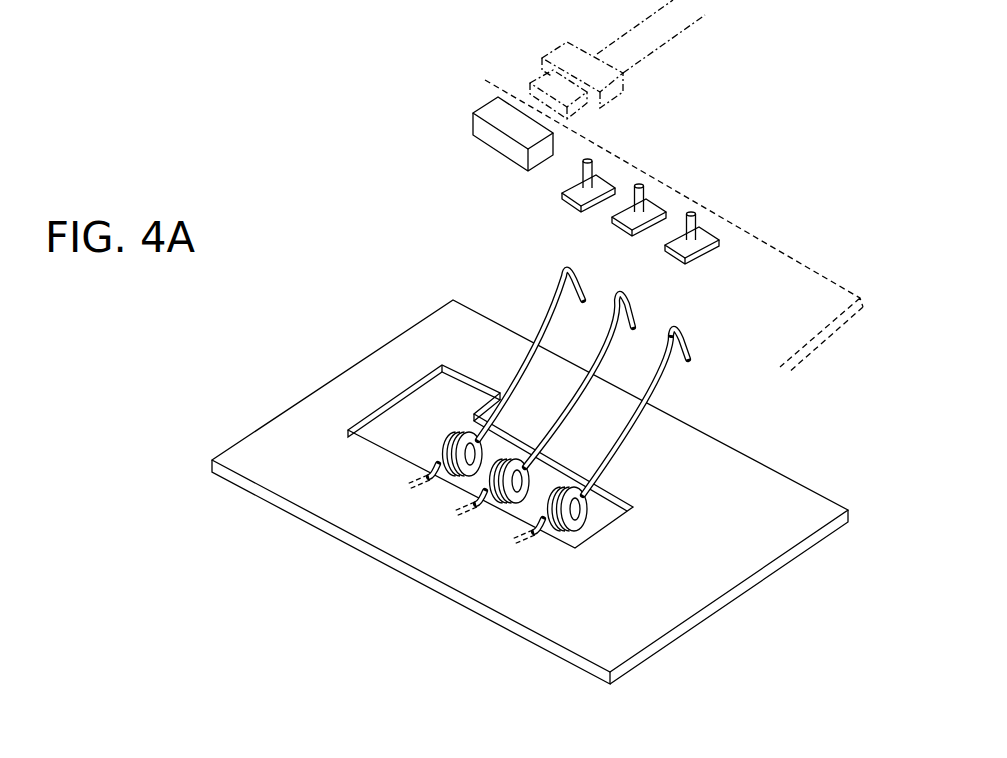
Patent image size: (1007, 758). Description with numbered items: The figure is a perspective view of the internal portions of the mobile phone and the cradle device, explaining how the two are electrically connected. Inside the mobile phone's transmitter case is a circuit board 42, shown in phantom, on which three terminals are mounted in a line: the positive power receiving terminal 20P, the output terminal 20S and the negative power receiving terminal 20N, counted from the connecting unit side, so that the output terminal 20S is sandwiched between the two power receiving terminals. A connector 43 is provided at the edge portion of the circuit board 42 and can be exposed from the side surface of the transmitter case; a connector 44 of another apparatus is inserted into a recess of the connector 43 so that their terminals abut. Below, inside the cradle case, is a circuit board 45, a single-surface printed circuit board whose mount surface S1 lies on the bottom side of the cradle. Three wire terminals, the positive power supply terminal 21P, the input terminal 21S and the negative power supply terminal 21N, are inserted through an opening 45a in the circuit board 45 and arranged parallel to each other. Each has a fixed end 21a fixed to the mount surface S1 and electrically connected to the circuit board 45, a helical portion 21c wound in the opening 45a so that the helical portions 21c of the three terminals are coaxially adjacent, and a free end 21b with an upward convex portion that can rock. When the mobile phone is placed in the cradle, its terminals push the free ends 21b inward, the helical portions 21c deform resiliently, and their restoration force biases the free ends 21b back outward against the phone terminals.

The circuit board 45 is at (748, 582).
The opening 45a is at (398, 400).
The mount surface S1 is at (647, 660).
The negative power supply terminal 21N is at (562, 274).
The input terminal 21S is at (622, 299).
The positive power supply terminal 21P is at (634, 454).
The fixed end 21a is at (531, 541).
The free end 21b is at (690, 361).
The helical portion 21c is at (582, 522).
The negative power receiving terminal 20N is at (563, 203).
The output terminal 20S is at (617, 223).
The positive power receiving terminal 20P is at (673, 251).
The connector 43 is at (498, 141).
The connector of the other apparatus 44 is at (618, 98).
The circuit board 42 is at (793, 271).